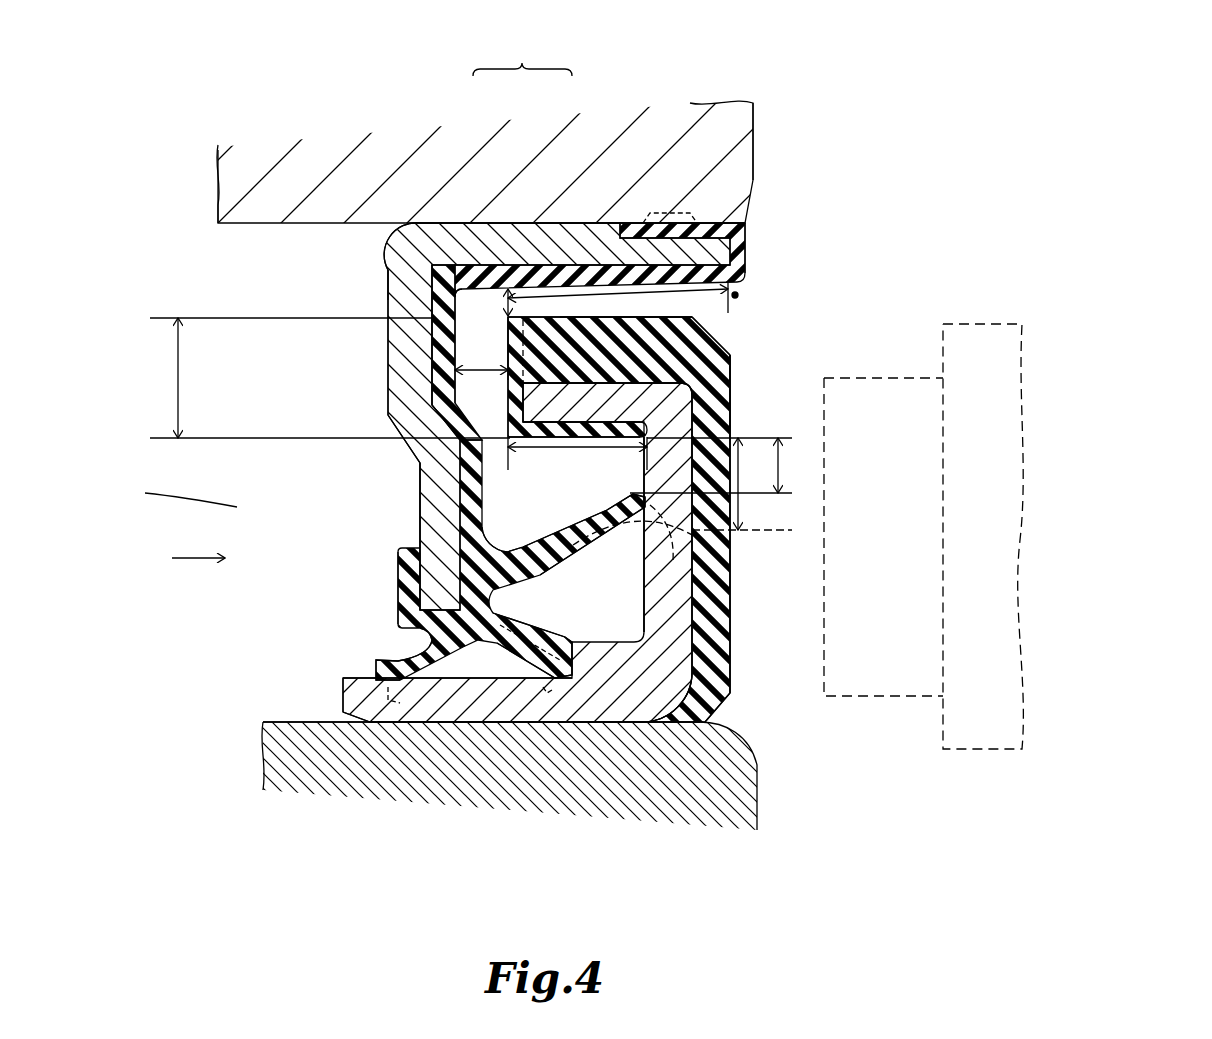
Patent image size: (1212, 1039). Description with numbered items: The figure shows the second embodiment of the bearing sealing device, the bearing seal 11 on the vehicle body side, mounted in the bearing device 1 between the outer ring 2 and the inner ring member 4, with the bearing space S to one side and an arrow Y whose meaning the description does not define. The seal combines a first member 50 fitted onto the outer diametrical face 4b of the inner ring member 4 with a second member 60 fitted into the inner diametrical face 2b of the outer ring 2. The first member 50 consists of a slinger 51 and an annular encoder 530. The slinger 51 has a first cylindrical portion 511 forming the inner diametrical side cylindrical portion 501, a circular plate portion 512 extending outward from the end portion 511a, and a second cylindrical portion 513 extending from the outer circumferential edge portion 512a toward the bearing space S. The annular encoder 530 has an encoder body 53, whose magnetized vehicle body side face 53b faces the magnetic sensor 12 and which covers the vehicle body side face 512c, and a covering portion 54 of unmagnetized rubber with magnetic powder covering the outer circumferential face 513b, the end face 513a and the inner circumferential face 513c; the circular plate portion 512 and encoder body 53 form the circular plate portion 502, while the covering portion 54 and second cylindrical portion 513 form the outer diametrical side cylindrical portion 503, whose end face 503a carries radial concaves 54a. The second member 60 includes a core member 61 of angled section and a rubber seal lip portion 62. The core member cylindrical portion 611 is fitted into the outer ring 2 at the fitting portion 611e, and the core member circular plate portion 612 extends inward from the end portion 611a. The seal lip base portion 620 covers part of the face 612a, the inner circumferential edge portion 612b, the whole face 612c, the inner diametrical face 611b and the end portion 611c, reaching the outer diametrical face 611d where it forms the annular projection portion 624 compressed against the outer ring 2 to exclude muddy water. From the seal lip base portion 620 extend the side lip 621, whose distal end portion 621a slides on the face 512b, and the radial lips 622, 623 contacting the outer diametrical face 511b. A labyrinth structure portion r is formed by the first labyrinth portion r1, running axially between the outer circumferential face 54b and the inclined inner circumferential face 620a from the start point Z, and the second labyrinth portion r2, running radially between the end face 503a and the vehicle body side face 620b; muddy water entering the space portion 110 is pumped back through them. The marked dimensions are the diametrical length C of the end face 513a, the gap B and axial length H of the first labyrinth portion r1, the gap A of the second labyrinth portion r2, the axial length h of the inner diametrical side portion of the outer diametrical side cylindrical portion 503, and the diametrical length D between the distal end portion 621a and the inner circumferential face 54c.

The bearing device 1 is at (803, 100).
The outer ring 2 is at (585, 163).
The inner diametrical face of the outer ring 2b is at (268, 223).
The inner ring member 4 is at (722, 815).
The outer diametrical face of the inner ring member 4b is at (292, 722).
The bearing seal 11 is at (853, 398).
The magnetic sensor 12 is at (955, 752).
The first member 50 is at (782, 507).
The slinger 51 is at (742, 688).
The inner diametrical side cylindrical portion 501 is at (576, 688).
The circular plate portion 502 is at (881, 580).
The outer diametrical side cylindrical portion 503 is at (866, 250).
The end face of the outer diametrical side cylindrical portion 503a is at (507, 340).
The first cylindrical portion 511 is at (672, 642).
The end portion of the first cylindrical portion 511a is at (667, 697).
The outer diametrical face of the first cylindrical portion 511b is at (592, 676).
The circular plate portion of the slinger 512 is at (670, 603).
The outer circumferential edge portion of the circular plate portion 512a is at (673, 417).
The face of the circular plate portion on the bearing space side 512b is at (645, 600).
The vehicle body side face of the circular plate portion 512c is at (708, 568).
The second cylindrical portion 513 is at (713, 350).
The end face of the second cylindrical portion 513a is at (520, 437).
The outer circumferential face of the second cylindrical portion 513b is at (685, 330).
The inner circumferential face of the second cylindrical portion 513c is at (582, 425).
The encoder body 53 is at (713, 587).
The vehicle body side face of the encoder body 53b is at (730, 628).
The covering portion 54 is at (690, 333).
The concaves 54a is at (507, 362).
The outer circumferential face of the covering portion 54b is at (628, 313).
The inner circumferential face of the covering portion 54c is at (563, 437).
The annular encoder 530 is at (745, 388).
The second member 60 is at (283, 470).
The core member 61 is at (385, 400).
The seal lip portion 62 is at (470, 461).
The space portion 110 is at (520, 513).
The core member cylindrical portion 611 is at (457, 240).
The end portion of the core member cylindrical portion 611a is at (412, 253).
The inner diametrical face of the core member cylindrical portion 611b is at (430, 237).
The end portion of the core member cylindrical portion opposite the bearing space 611c is at (742, 257).
The outer diametrical face of the core member cylindrical portion 611d is at (718, 232).
The fitting portion 611e is at (478, 328).
The core member circular plate portion 612 is at (408, 318).
The face of the core member circular plate portion on the bearing space side 612a is at (420, 518).
The inner circumferential edge portion 612b is at (420, 630).
The face of the core member circular plate portion opposite the bearing space 612c is at (458, 560).
The seal lip base portion 620 is at (440, 298).
The inner circumferential face of the seal lip base portion 620a is at (600, 268).
The vehicle body side face of the seal lip base portion 620b is at (432, 377).
The side lip 621 is at (597, 542).
The distal end portion of the side lip 621a is at (707, 548).
The radial lip 622 is at (517, 632).
The radial lip 623 is at (373, 665).
The annular projection portion 624 is at (672, 213).
The diametrical direction length C is at (175, 374).
The gap of the first labyrinth portion B is at (496, 303).
The shaft direction length of the first labyrinth portion H is at (618, 300).
The gap of the second labyrinth portion A is at (481, 397).
The shaft direction length h is at (577, 455).
The diametrical direction length D is at (722, 484).
The axial direction Y is at (188, 560).
The bearing space S is at (185, 492).
The start point Z is at (740, 292).
The labyrinth structure portion r is at (522, 55).
The first labyrinth portion r1 is at (567, 300).
The second labyrinth portion r2 is at (480, 262).